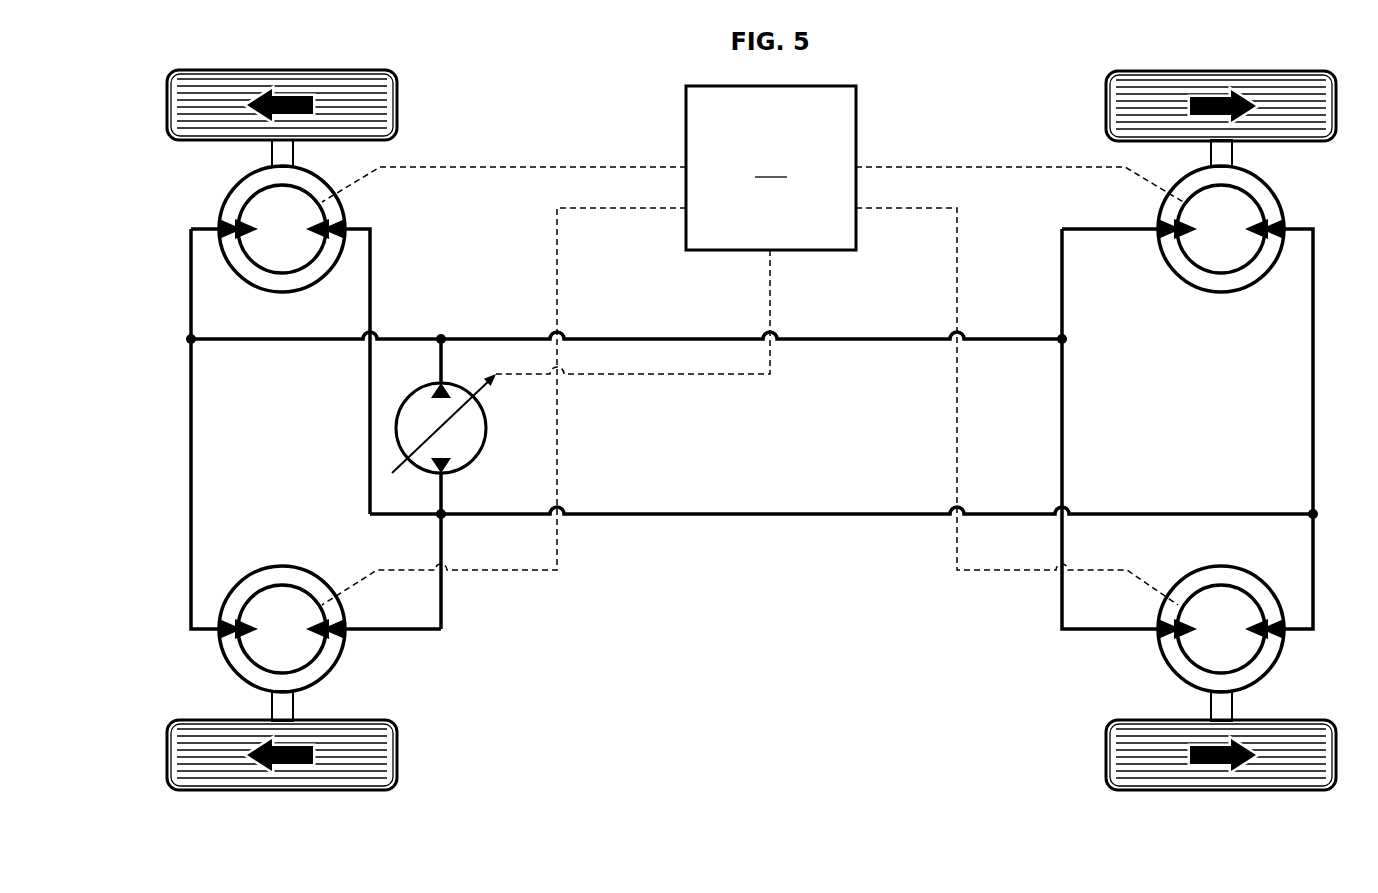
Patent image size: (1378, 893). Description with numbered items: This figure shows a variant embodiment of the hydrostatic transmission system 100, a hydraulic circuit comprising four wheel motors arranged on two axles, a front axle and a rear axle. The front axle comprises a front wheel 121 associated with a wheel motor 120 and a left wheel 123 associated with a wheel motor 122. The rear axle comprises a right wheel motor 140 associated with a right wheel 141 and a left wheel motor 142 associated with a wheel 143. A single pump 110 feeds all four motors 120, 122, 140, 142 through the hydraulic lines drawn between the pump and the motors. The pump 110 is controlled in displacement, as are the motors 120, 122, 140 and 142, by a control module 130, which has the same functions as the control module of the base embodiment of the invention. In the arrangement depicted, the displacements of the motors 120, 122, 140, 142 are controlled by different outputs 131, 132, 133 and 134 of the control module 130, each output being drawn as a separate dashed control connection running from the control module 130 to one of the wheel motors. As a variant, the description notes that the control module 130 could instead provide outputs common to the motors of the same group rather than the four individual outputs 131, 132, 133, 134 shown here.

The hydrostatic transmission system 100 is at (539, 130).
The pump 110 is at (495, 446).
The wheel motor 120 is at (226, 187).
The front wheel 121 is at (410, 104).
The wheel motor 122 is at (226, 676).
The left wheel 123 is at (410, 754).
The control module 130 is at (771, 168).
The output of the control module 131 is at (614, 165).
The output of the control module 132 is at (614, 211).
The output of the control module 133 is at (912, 165).
The output of the control module 134 is at (912, 211).
The right wheel motor 140 is at (1278, 187).
The right wheel 141 is at (1098, 104).
The left wheel motor 142 is at (1278, 676).
The wheel 143 is at (1098, 754).